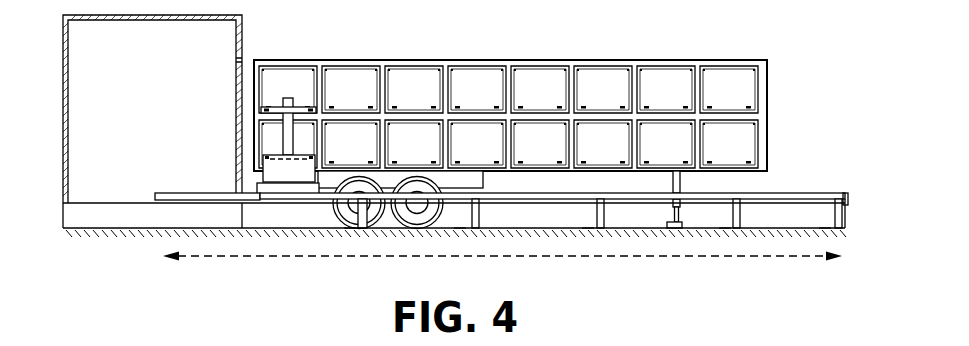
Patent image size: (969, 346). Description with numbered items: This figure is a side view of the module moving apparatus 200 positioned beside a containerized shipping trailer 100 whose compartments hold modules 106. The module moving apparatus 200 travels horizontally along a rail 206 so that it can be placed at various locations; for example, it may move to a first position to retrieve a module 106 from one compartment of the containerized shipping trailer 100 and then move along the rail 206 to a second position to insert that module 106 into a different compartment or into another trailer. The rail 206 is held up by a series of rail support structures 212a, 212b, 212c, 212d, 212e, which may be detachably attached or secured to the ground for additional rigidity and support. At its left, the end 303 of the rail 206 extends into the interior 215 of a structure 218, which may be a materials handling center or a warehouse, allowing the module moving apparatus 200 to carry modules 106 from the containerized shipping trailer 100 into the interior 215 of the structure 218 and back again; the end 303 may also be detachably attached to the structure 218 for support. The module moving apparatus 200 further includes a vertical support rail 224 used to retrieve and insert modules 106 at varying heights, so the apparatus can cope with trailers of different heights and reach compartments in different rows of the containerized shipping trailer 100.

The containerized shipping trailer 100 is at (758, 60).
The module 106 is at (288, 96).
The module moving apparatus 200 is at (288, 174).
The rail 206 is at (805, 193).
The rail support structure 212a is at (350, 228).
The rail support structure 212b is at (460, 228).
The rail support structure 212c is at (588, 228).
The rail support structure 212d is at (725, 228).
The rail support structure 212e is at (825, 228).
The interior 215 is at (152, 111).
The structure 218 is at (243, 30).
The vertical support rail 224 is at (283, 131).
The end of the rail 303 is at (159, 187).